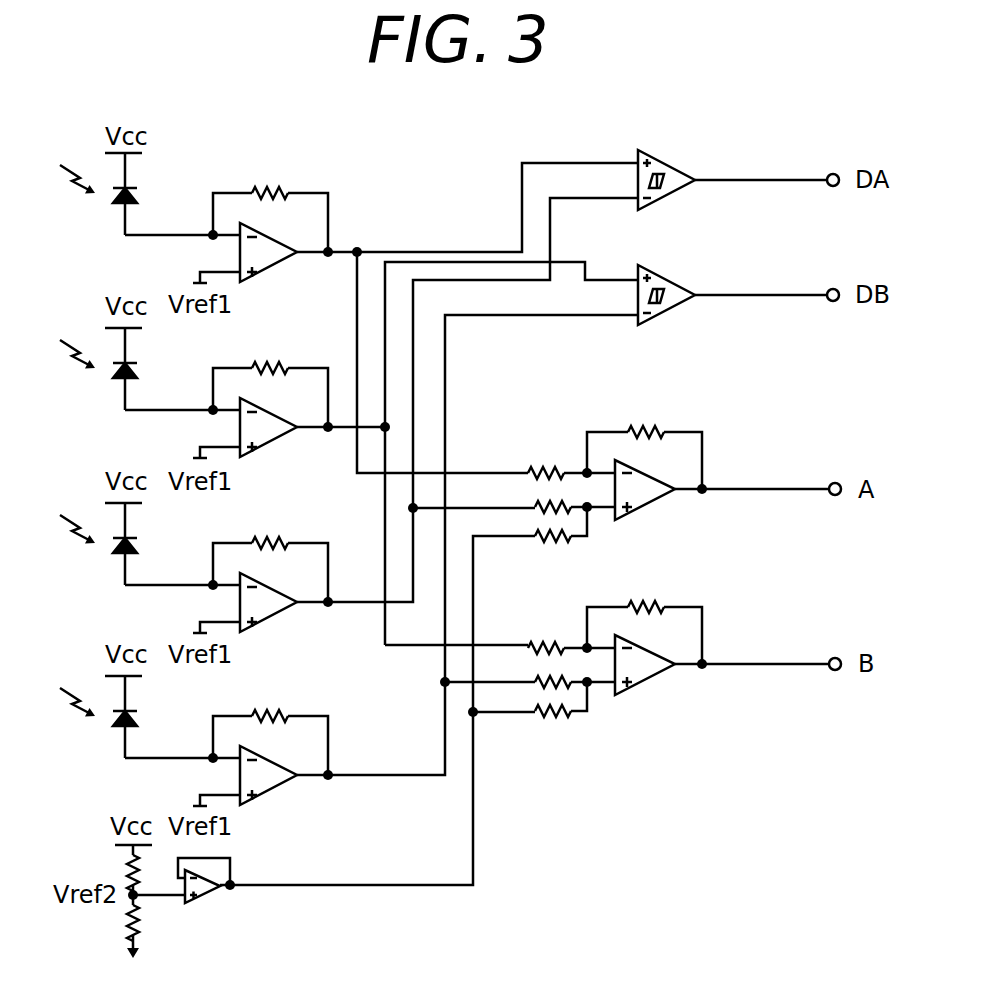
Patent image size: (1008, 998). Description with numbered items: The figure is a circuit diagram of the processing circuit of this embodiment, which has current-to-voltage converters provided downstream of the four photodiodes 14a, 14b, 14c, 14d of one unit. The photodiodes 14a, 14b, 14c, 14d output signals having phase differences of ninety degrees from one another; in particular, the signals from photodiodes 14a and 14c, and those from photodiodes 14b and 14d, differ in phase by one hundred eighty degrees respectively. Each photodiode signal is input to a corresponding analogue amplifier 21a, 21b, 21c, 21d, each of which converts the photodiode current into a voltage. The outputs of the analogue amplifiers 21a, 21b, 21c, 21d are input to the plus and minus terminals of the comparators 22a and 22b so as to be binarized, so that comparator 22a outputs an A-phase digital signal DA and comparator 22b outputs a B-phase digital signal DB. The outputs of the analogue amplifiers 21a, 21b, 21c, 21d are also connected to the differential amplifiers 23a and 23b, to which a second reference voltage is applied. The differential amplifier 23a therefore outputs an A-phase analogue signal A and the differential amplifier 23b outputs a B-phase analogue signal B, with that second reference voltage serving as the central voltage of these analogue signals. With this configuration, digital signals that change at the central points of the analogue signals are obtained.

The photodiode 14a is at (128, 194).
The photodiode 14b is at (128, 369).
The photodiode 14c is at (128, 544).
The photodiode 14d is at (128, 717).
The analogue amplifier 21a is at (263, 219).
The analogue amplifier 21b is at (263, 394).
The analogue amplifier 21c is at (263, 568).
The analogue amplifier 21d is at (263, 741).
The comparator 22a is at (738, 173).
The comparator 22b is at (738, 288).
The differential amplifier 23a is at (684, 467).
The differential amplifier 23b is at (684, 642).